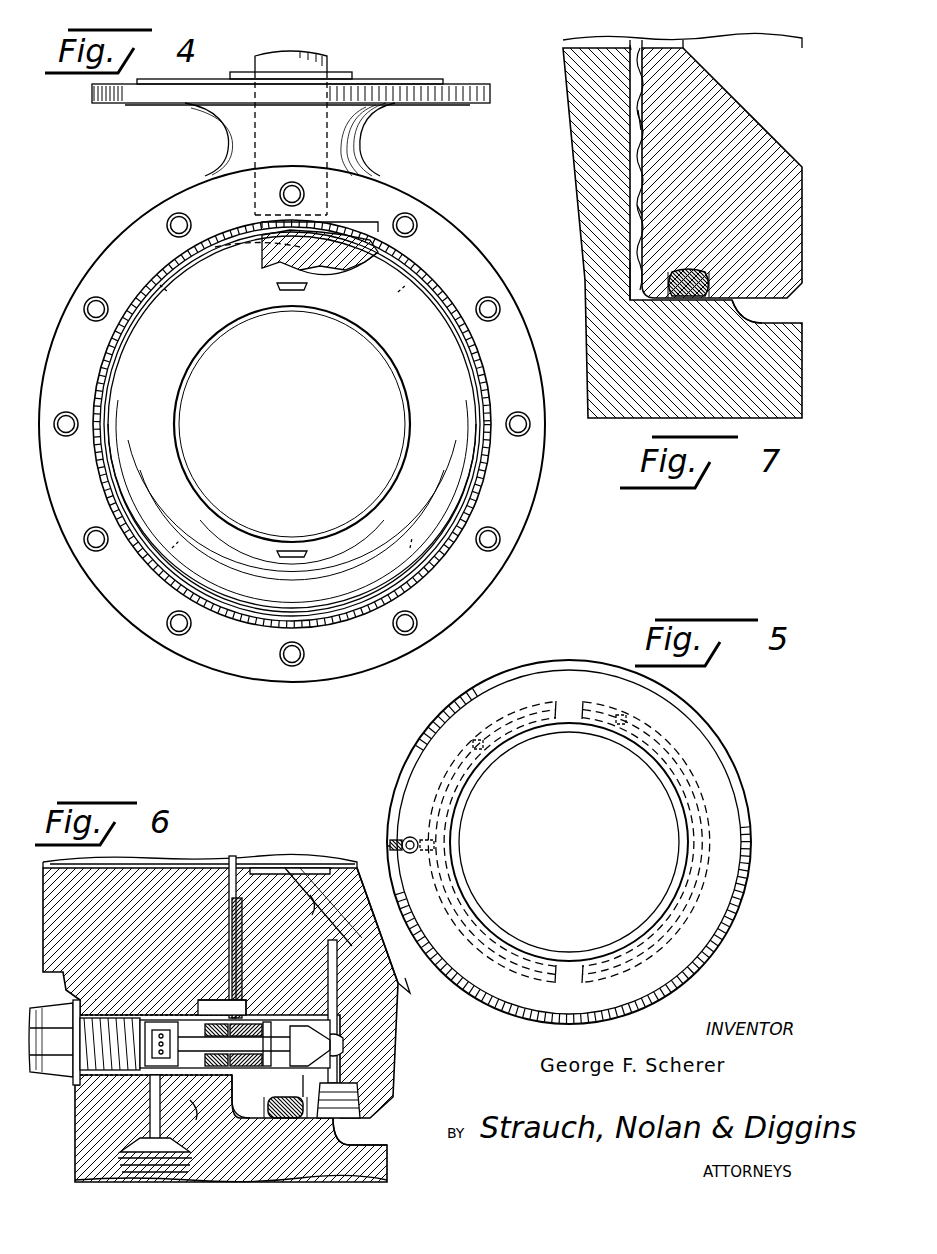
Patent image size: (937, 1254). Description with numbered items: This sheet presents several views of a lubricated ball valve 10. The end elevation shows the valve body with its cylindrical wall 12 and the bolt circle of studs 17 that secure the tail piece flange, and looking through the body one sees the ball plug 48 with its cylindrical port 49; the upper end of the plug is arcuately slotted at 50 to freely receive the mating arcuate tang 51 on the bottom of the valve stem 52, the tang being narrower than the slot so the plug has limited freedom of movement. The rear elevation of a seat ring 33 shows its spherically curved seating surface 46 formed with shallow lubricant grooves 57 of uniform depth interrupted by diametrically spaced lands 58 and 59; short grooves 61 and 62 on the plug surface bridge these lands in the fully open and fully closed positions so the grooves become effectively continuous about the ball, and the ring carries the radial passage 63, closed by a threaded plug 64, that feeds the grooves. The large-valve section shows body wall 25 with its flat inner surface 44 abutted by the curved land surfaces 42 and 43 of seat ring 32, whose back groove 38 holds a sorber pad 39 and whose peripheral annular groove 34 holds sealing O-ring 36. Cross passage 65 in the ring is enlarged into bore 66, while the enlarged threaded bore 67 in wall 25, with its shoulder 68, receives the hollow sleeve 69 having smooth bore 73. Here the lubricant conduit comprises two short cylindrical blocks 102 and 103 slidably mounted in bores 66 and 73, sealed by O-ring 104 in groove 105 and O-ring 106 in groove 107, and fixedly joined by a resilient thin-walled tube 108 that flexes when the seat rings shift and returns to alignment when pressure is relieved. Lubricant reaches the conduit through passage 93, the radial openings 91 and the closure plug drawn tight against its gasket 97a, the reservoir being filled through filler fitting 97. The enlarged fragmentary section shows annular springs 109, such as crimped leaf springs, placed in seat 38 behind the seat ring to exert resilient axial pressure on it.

In FIG. 4, the flange coupling 10 is at (505, 562).
In FIG. 7, the cylindrical wall 12 is at (620, 418).
In FIG. 4, the studs 17 is at (492, 300).
In FIG. 6, the body wall 25 is at (168, 872).
In FIG. 7, the valve seat ring 32 is at (778, 284).
In FIG. 6, the valve seat ring 32 is at (378, 1112).
In FIG. 5, the valve seat ring 33 is at (742, 772).
In FIG. 7, the annular groove 34 is at (698, 280).
In FIG. 6, the annular groove 34 is at (272, 1120).
In FIG. 7, the sealing O-ring 36 is at (684, 272).
In FIG. 6, the sealing O-ring 36 is at (300, 1120).
In FIG. 7, the back surface groove 38 is at (645, 180).
In FIG. 5, the sorber pad 39 is at (730, 802).
In FIG. 7, the curved surface 42 is at (630, 64).
In FIG. 6, the curved surface 42 is at (232, 870).
In FIG. 7, the curved surface 43 is at (628, 266).
In FIG. 7, the flat inner surface 44 is at (643, 126).
In FIG. 7, the seating surface 46 is at (740, 108).
In FIG. 6, the seating surface 46 is at (400, 986).
In FIG. 4, the ball plug 48 is at (410, 354).
In FIG. 6, the ball plug 48 is at (322, 866).
In FIG. 4, the cylindrical port 49 is at (252, 530).
In FIG. 4, the arcuate slot 50 is at (350, 270).
In FIG. 4, the tang 51 is at (335, 245).
In FIG. 4, the valve stem 52 is at (330, 62).
In FIG. 5, the lubricant grooves 57 is at (640, 720).
In FIG. 6, the lubricant grooves 57 is at (325, 902).
In FIG. 5, the land 58 is at (575, 708).
In FIG. 5, the land 59 is at (576, 984).
In FIG. 4, the short groove 61 is at (277, 287).
In FIG. 4, the short groove 62 is at (180, 540).
In FIG. 6, the short groove 62 is at (362, 866).
In FIG. 5, the radial passage 63 is at (413, 838).
In FIG. 6, the radial passage 63 is at (343, 1028).
In FIG. 6, the threaded plug 64 is at (336, 1122).
In FIG. 6, the cross passage 65 is at (337, 1048).
In FIG. 5, the bore 66 is at (394, 842).
In FIG. 6, the bore 66 is at (267, 1022).
In FIG. 6, the threaded bore 67 is at (112, 1010).
In FIG. 6, the shoulder 68 is at (200, 1108).
In FIG. 6, the hollow sleeve 69 is at (80, 1095).
In FIG. 6, the smooth bore 73 is at (175, 1010).
In FIG. 6, the radial openings 91 is at (190, 1100).
In FIG. 6, the passage 93 is at (150, 1122).
In FIG. 6, the filler fitting 97 is at (64, 1008).
In FIG. 6, the sealing gasket 97a is at (73, 1082).
In FIG. 6, the cylindrical block 102 is at (292, 1028).
In FIG. 6, the cylindrical block 103 is at (208, 1024).
In FIG. 6, the sealing O-ring 104 is at (198, 1000).
In FIG. 6, the annular peripheral groove 105 is at (234, 1080).
In FIG. 6, the sealing O-ring 106 is at (262, 1026).
In FIG. 6, the annular peripheral groove 107 is at (292, 1072).
In FIG. 6, the resilient flexible thin-walled tube 108 is at (238, 1054).
In FIG. 7, the annular springs 109 is at (644, 212).